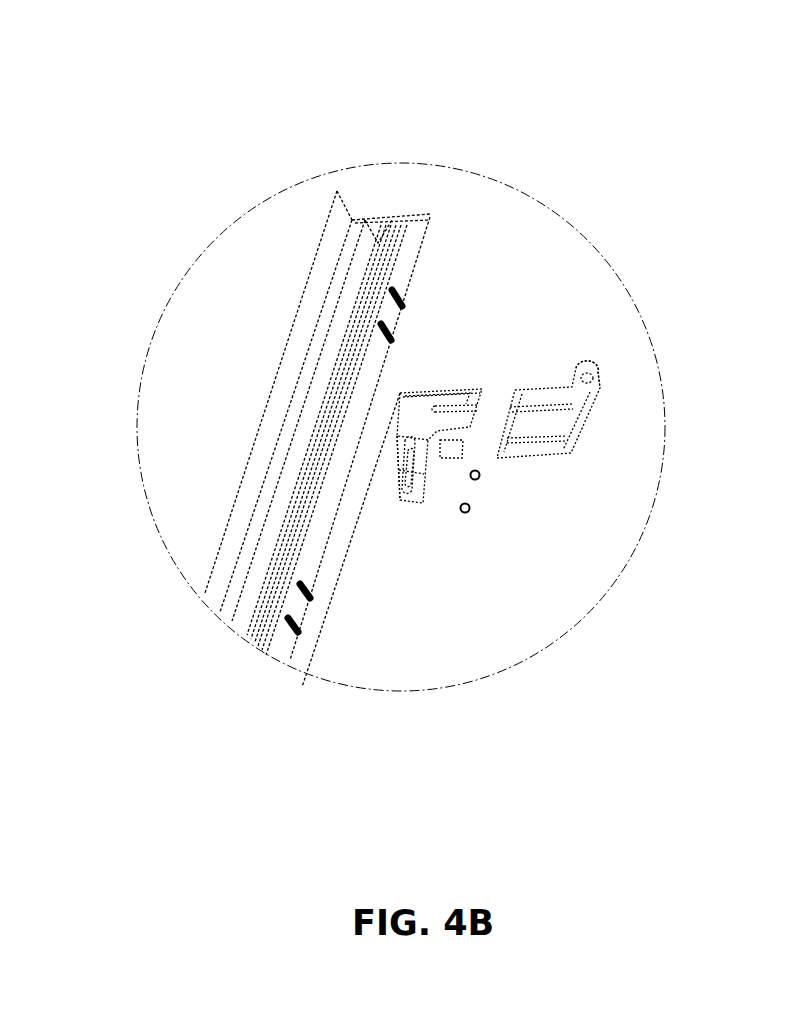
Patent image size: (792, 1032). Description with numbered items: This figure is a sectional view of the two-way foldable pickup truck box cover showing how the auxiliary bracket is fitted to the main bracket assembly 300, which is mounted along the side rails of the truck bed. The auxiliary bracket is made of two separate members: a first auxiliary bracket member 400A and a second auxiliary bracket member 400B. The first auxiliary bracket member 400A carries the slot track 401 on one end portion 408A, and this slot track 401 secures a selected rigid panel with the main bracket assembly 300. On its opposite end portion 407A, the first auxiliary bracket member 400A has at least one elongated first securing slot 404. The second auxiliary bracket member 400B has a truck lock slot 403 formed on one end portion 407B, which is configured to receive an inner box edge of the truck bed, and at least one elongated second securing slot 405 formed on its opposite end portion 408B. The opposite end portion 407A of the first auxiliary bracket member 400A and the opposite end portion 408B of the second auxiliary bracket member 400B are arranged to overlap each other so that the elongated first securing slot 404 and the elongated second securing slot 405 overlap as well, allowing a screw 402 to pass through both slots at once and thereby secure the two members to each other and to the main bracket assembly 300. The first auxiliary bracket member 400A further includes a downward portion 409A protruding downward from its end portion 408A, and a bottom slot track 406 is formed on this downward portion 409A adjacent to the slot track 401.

The main bracket assembly 300 is at (335, 250).
The first auxiliary bracket member 400A is at (431, 397).
The second auxiliary bracket member 400B is at (558, 450).
The slot track 401 is at (397, 480).
The screw 402 is at (395, 283).
The truck lock slot 403 is at (587, 366).
The elongated first securing slot 404 is at (461, 405).
The elongated second securing slot 405 is at (506, 446).
The bottom slot track 406 is at (413, 467).
The opposite end portion of first auxiliary bracket 407A is at (452, 402).
The end portion of second auxiliary bracket 407B is at (597, 382).
The end portion of first auxiliary bracket 408A is at (395, 442).
The opposite end portion of second auxiliary bracket 408B is at (528, 455).
The downward portion 409A is at (422, 487).